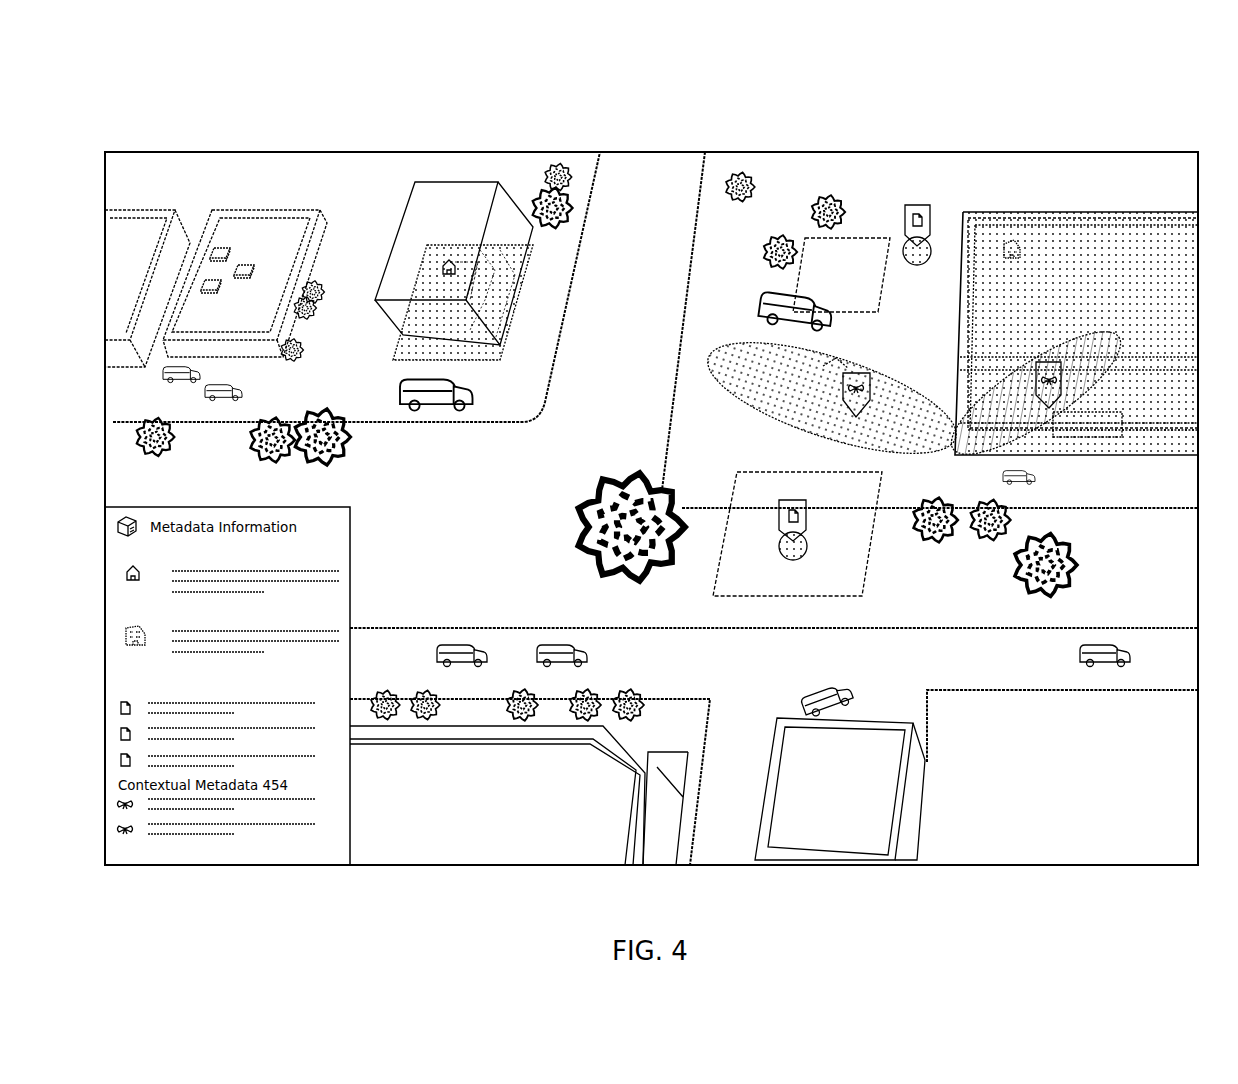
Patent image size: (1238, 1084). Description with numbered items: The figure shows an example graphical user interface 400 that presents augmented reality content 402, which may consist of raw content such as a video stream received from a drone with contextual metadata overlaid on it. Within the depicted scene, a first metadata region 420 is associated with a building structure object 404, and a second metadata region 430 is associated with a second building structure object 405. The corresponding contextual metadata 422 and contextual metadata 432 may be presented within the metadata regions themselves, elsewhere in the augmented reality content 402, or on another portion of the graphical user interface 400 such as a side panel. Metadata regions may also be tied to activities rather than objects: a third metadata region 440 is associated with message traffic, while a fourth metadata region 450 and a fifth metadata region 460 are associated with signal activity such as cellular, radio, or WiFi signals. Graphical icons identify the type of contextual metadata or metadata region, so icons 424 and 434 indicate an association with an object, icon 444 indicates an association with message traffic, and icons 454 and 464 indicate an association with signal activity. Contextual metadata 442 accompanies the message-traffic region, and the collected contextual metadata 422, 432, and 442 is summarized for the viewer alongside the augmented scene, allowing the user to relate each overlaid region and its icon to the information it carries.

The graphical user interface 400 is at (348, 98).
The augmented reality content 402 is at (462, 527).
The building structure object 404 is at (412, 190).
The second building structure object 405 is at (1138, 210).
The first metadata region 420 is at (490, 242).
The contextual metadata 422 is at (233, 572).
The icon 424 is at (441, 264).
The second metadata region 430 is at (1013, 222).
The contextual metadata 432 is at (233, 632).
The icon 434 is at (1022, 246).
The third metadata region 440 is at (790, 560).
The contextual metadata 442 is at (217, 721).
The icon 444 is at (808, 520).
The fourth metadata region 450 is at (712, 352).
The icon 454 is at (843, 400).
The fifth metadata region 460 is at (997, 378).
The icon 464 is at (1062, 362).